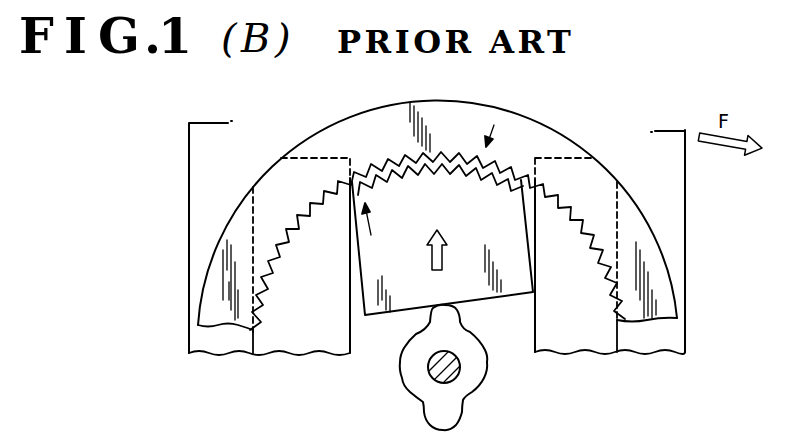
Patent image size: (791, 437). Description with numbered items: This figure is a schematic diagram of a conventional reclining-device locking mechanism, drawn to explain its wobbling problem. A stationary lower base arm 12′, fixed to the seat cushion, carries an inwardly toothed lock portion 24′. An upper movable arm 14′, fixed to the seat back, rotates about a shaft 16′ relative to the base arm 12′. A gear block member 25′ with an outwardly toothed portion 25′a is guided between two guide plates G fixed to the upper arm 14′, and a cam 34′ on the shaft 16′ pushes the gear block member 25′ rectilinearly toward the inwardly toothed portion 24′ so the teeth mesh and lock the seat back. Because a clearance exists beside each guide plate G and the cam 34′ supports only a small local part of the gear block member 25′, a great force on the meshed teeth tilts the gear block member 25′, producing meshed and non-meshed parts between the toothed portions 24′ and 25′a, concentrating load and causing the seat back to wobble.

The upper movable arm 14′ is at (207, 179).
The stationary lower base arm 12′ is at (212, 285).
The inwardly toothed lock portion 24′ is at (380, 162).
The gear block member 25′ is at (470, 226).
The outwardly toothed portion 25′a is at (418, 170).
The shaft 16′ is at (430, 372).
The cam 34′ is at (484, 386).
The guide plate G is at (293, 343).